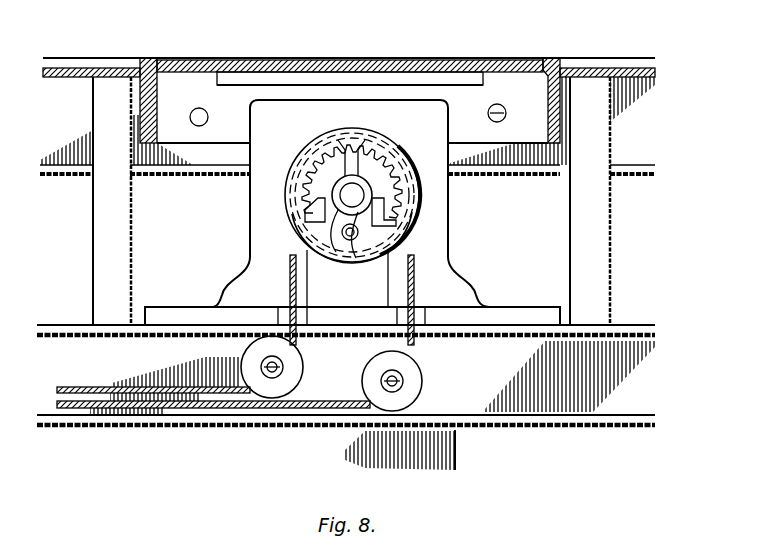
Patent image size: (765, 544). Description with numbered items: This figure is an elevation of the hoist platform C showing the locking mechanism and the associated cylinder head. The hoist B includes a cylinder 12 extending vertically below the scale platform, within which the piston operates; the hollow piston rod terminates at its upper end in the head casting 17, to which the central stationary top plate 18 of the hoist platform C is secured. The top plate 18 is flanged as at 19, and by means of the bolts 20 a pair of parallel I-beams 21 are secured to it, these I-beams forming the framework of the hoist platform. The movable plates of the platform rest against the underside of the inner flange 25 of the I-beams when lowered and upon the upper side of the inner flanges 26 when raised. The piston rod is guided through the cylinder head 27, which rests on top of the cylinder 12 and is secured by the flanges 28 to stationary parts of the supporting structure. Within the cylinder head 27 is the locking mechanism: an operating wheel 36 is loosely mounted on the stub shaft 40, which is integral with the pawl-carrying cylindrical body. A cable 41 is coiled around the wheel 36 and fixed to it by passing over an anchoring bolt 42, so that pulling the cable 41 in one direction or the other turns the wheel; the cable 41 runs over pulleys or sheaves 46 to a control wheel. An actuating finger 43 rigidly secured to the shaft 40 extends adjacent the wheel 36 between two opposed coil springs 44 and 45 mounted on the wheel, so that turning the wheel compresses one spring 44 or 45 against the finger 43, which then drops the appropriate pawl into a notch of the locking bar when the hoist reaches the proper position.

The cylinder 12 is at (404, 94).
The head casting 17 is at (284, 80).
The central stationary top plate 18 is at (208, 63).
The flange 19 is at (147, 105).
The bolts 20 is at (204, 114).
The I-beams 21 is at (85, 170).
The inner flange 25 is at (140, 60).
The inner flanges 26 is at (212, 173).
The cylinder head 27 is at (435, 232).
The flanges 28 is at (192, 315).
The operating wheel 36 is at (377, 235).
The stub shaft 40 is at (352, 195).
The cable 41 is at (408, 343).
The anchoring bolt 42 is at (346, 238).
The actuating finger 43 is at (347, 153).
The coil spring 44 is at (435, 141).
The coil spring 45 is at (303, 153).
The pulleys or sheaves 46 is at (242, 355).
The hoist B is at (343, 94).
The hoist platform C is at (247, 63).